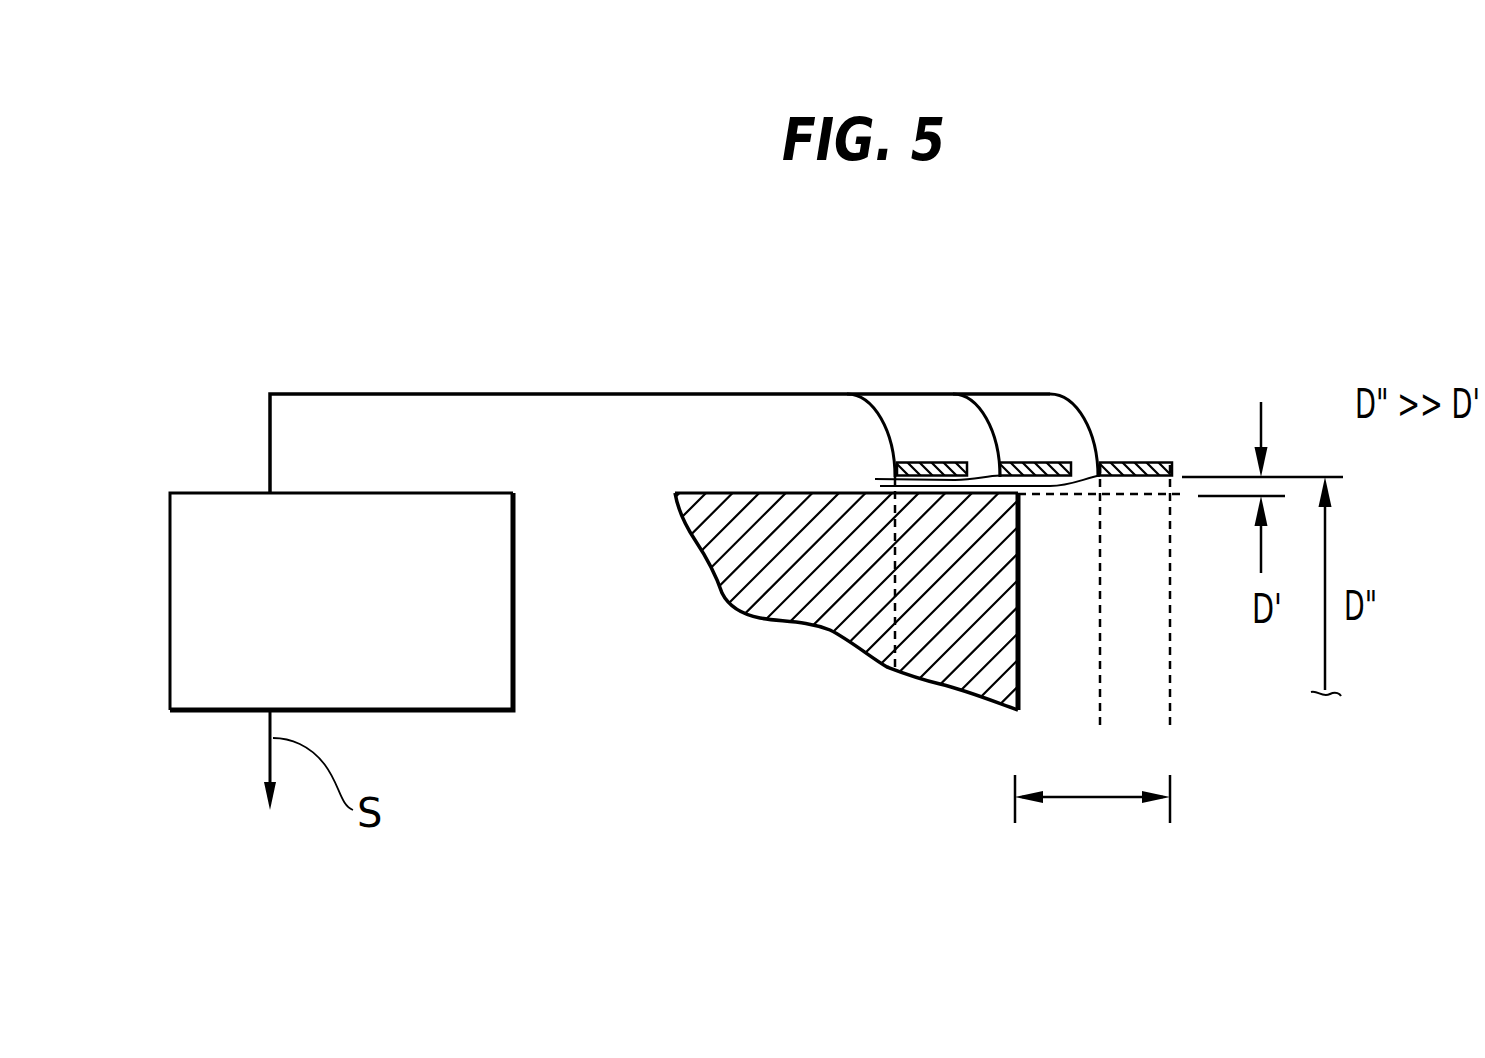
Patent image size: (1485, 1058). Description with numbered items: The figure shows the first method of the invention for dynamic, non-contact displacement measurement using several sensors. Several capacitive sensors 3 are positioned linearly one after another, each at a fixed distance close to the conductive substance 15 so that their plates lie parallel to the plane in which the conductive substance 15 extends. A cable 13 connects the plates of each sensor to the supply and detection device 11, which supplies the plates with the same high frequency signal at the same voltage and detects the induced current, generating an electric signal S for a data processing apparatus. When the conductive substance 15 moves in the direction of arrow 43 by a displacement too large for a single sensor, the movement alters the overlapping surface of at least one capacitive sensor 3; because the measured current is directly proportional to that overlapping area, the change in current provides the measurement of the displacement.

The cable 13 is at (269, 414).
The supply and detection device 11 is at (487, 622).
The capacitive sensor 3 is at (1015, 469).
The conductive substance 15 is at (802, 595).
The arrow 43 is at (1090, 793).